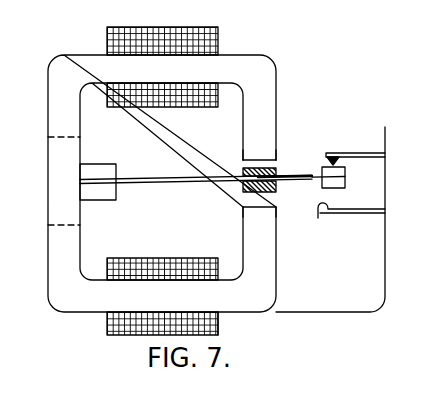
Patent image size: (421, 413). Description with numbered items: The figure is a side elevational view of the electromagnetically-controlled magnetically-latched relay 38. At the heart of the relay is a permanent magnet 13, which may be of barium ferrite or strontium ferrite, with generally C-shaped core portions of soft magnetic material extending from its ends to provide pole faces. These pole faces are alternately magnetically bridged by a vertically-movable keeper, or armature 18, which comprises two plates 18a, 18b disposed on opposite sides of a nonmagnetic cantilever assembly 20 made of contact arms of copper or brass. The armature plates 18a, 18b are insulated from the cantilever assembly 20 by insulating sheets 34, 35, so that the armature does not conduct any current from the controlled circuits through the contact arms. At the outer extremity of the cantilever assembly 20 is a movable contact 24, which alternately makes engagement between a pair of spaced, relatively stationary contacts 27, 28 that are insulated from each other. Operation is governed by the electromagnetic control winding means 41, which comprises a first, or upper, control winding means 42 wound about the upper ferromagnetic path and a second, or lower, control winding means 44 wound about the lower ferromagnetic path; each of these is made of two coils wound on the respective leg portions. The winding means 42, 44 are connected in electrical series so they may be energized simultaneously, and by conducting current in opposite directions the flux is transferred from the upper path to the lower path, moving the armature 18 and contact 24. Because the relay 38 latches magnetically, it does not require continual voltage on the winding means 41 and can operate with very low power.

The relay 38 is at (72, 49).
The first control winding means 42 is at (220, 29).
The permanent magnet 13 is at (82, 146).
The cantilever assembly 20 is at (152, 178).
The insulating sheet 34 is at (243, 172).
The insulating sheet 35 is at (243, 186).
The armature 18 is at (277, 162).
The armature plate 18a is at (241, 167).
The armature plate 18b is at (239, 195).
The stationary contact 27 is at (329, 163).
The movable contact 24 is at (347, 182).
The stationary contact 28 is at (342, 222).
The electromagnetic control winding means 41 is at (107, 326).
The second control winding means 44 is at (256, 337).